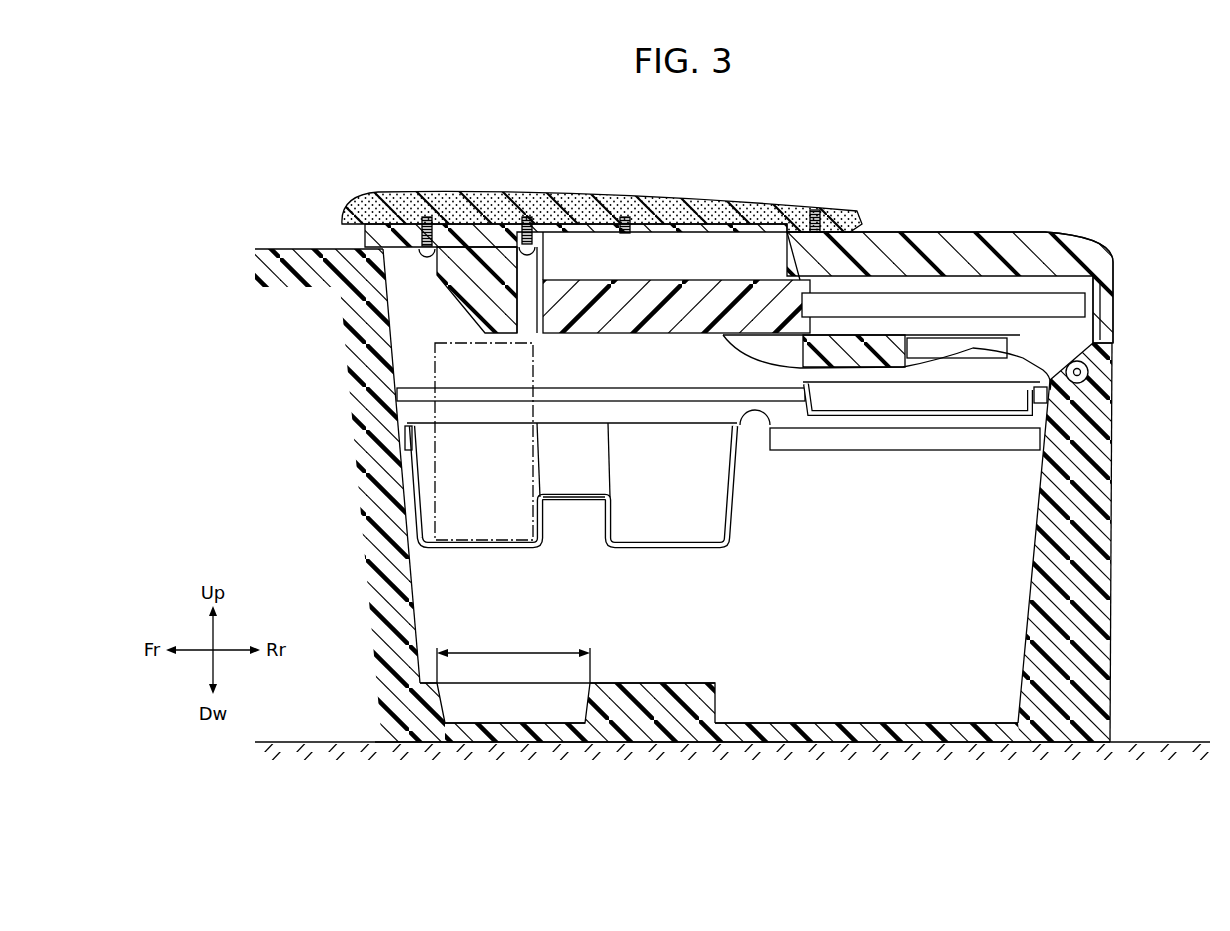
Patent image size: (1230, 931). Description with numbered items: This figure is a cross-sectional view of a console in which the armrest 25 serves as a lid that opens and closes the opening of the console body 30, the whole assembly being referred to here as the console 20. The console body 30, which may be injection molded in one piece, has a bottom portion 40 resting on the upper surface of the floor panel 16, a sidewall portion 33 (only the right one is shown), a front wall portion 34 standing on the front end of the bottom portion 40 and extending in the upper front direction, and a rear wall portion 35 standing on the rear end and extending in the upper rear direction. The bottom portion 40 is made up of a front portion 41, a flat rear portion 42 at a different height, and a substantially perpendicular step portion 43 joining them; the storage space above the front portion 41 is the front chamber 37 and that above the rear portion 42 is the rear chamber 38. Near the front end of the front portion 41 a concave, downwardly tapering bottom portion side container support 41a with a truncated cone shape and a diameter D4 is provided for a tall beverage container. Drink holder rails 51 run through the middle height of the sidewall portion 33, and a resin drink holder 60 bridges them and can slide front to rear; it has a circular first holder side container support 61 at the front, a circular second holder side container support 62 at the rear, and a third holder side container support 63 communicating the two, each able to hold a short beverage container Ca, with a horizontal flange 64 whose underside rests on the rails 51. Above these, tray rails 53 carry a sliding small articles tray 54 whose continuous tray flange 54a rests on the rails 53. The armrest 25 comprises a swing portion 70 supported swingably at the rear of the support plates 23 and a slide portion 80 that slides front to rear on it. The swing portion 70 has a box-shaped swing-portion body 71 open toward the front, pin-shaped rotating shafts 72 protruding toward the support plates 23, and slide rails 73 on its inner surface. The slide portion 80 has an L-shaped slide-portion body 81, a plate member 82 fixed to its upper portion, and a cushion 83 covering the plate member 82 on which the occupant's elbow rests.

The floor panel 16 is at (1142, 742).
The console box 20 is at (1142, 180).
The support plate 23 is at (1116, 350).
The armrest 25 is at (835, 126).
The console body 30 is at (283, 248).
The sidewall portion 33 is at (918, 648).
The front wall portion 34 is at (417, 599).
The rear wall portion 35 is at (1025, 578).
The front chamber 37 is at (584, 594).
The rear chamber 38 is at (874, 594).
The bottom portion 40 is at (660, 812).
The front portion 41 is at (653, 688).
The bottom portion side container support 41a is at (540, 723).
The rear portion 42 is at (763, 723).
The step portion 43 is at (734, 723).
The drink holder rail 51 is at (1030, 455).
The tray rail 53 is at (416, 392).
The small articles tray 54 is at (934, 417).
The tray flange 54a is at (1095, 417).
The drink holder 60 is at (737, 543).
The first holder side container support 61 is at (497, 505).
The second holder side container support 62 is at (676, 505).
The third holder side container support 63 is at (566, 500).
The flange 64 is at (758, 430).
The swing portion 70 is at (926, 226).
The swing-portion body 71 is at (1048, 240).
The rotating shaft 72 is at (1090, 373).
The slide rail 73 is at (999, 292).
The slide portion 80 is at (784, 191).
The slide-portion body 81 is at (603, 283).
The plate member 82 is at (654, 238).
The cushion 83 is at (512, 222).
The short beverage container Ca is at (433, 348).
The diameter of bottom portion side container support D4 is at (513, 655).